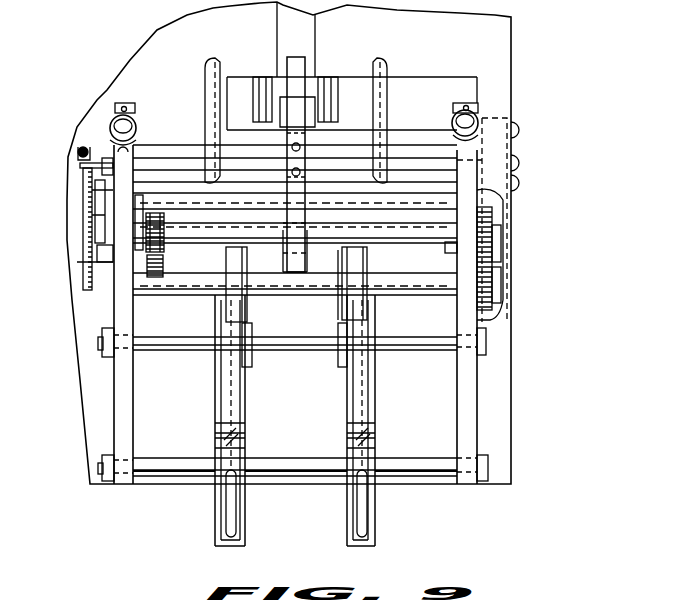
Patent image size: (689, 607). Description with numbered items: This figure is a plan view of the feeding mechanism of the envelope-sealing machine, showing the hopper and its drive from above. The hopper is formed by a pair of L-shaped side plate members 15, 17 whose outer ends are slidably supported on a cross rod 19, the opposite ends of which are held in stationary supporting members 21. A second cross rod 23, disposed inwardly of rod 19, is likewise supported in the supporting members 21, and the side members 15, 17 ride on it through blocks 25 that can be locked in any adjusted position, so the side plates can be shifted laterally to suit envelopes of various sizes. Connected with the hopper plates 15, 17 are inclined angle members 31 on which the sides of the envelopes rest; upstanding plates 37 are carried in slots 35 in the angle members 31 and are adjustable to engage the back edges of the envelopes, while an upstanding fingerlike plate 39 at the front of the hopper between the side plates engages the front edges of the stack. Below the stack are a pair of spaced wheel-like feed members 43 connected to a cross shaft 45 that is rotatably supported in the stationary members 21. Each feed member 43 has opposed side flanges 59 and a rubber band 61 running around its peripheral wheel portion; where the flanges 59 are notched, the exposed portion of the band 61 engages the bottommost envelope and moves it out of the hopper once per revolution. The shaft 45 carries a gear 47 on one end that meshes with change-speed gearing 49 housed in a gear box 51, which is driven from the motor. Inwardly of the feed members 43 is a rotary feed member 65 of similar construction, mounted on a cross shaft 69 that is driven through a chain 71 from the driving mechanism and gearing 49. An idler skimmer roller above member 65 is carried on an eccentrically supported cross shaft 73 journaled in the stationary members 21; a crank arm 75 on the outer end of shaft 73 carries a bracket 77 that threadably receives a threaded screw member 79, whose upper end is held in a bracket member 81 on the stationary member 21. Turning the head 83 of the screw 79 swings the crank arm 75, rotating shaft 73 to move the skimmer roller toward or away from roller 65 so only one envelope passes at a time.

The side plate member 15 is at (376, 497).
The side plate member 17 is at (217, 497).
The cross rod 19 is at (397, 458).
The stationary supporting members 21 is at (122, 423).
The cross rod 23 is at (415, 345).
The blocks 25 is at (340, 355).
The inclined angle members 31 is at (240, 532).
The slots 35 is at (360, 497).
The upstanding plates 37 is at (367, 450).
The fingerlike plate 39 is at (297, 70).
The wheel-like feed members 43 is at (248, 270).
The cross shaft 45 is at (315, 288).
The gear 47 is at (492, 285).
The gearing 49 is at (492, 250).
The gear box 51 is at (489, 160).
The side flanges 59 is at (340, 262).
The rubber band 61 is at (360, 268).
The rotary feed member 65 is at (297, 232).
The cross shaft 69 is at (186, 237).
The chain 71 is at (153, 277).
The eccentrically supported cross shaft 73 is at (170, 177).
The crank arm 75 is at (100, 165).
The bracket 77 is at (82, 258).
The threaded screw member 79 is at (82, 213).
The bracket member 81 is at (80, 165).
The head 83 is at (78, 152).